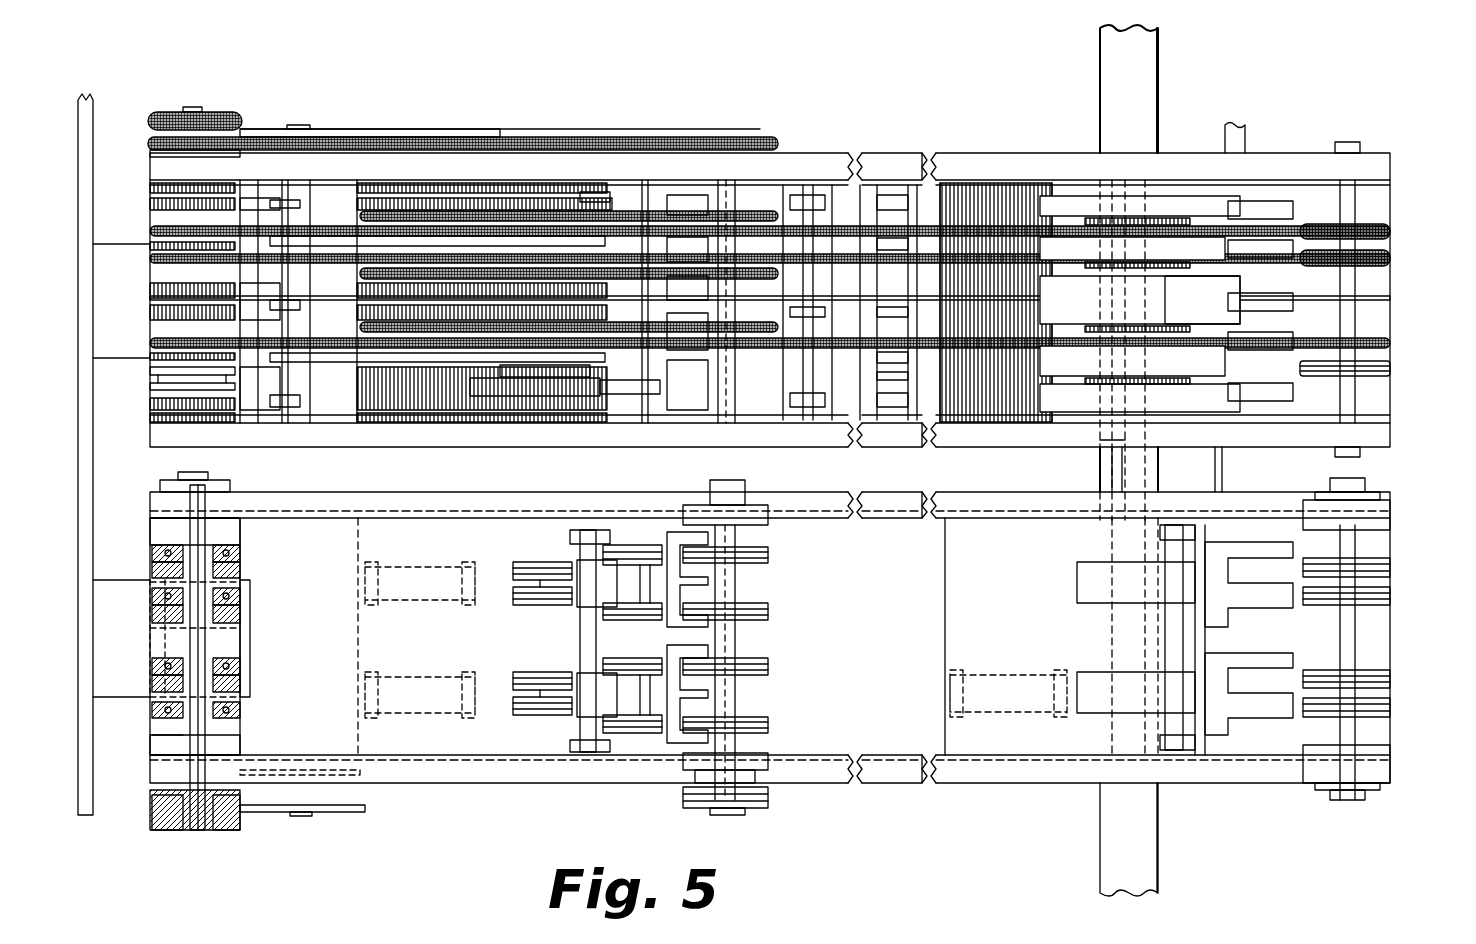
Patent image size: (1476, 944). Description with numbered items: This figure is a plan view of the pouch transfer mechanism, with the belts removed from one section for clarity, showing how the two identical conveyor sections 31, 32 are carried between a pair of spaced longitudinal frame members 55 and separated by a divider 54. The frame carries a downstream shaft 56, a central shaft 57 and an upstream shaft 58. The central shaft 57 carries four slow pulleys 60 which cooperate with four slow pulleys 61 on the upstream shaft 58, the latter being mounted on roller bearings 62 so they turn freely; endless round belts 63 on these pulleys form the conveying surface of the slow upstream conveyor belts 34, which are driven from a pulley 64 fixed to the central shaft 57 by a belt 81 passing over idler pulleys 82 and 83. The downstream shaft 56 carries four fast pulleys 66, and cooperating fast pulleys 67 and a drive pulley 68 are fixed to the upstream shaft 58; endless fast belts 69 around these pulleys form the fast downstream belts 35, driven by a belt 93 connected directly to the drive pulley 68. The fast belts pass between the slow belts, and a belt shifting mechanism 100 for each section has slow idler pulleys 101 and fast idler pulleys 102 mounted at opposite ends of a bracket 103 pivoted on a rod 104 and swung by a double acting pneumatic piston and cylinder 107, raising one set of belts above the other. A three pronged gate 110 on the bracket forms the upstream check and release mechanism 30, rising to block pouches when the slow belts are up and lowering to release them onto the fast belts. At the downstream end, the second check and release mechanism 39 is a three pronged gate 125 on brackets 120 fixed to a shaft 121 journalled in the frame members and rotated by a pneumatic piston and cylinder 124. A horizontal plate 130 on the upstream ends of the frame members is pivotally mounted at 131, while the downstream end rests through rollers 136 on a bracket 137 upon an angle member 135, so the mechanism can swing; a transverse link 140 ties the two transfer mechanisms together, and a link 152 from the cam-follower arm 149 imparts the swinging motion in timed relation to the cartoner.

The first or upstream check and release mechanism 30 is at (655, 190).
The conveyor section 31 is at (1408, 241).
The conveyor section 32 is at (1408, 341).
The upstream set of conveyor belts 34 is at (365, 185).
The downstream belts 35 is at (950, 190).
The second check and release mechanism 39 is at (1270, 200).
The divider 54 is at (1390, 297).
The longitudinal frame members 55 is at (815, 160).
The downstream shaft 56 is at (1355, 210).
The central shaft 57 is at (735, 140).
The upstream shaft 58 is at (193, 107).
The slow pulleys 60 is at (765, 213).
The slow pulleys 61 is at (237, 545).
The roller bearings 62 is at (160, 562).
The endless round belts 63 is at (415, 190).
The pulley 64 is at (700, 137).
The fast pulleys 66 is at (1386, 256).
The fast pulleys 67 is at (240, 574).
The drive pulley 68 is at (242, 118).
The endless fast belts 69 is at (990, 190).
The belt 81 is at (510, 137).
The idler pulley 82 is at (330, 129).
The idler pulley 83 is at (148, 150).
The belt 93 is at (144, 124).
The belt shifting mechanism 100 is at (545, 395).
The slow idler pulleys 101 is at (645, 395).
The fast idler pulleys 102 is at (490, 400).
The bracket 103 is at (597, 385).
The rod 104 is at (592, 192).
The double acting pneumatic piston and cylinder 107 is at (380, 299).
The three pronged gate 110 is at (708, 376).
The bracket 120 is at (1160, 606).
The shaft 121 is at (1180, 650).
The pneumatic double acting piston and cylinder 124 is at (1040, 175).
The three pronged gate 125 is at (1270, 310).
The horizontal plate 130 is at (160, 525).
The pivotal mounting 131 is at (150, 255).
The angle member 135 is at (1160, 45).
The rollers 136 is at (1133, 175).
The bracket 137 is at (1187, 601).
The transverse link 140 is at (1100, 462).
The arm 149 is at (1240, 118).
The link 152 is at (1228, 460).